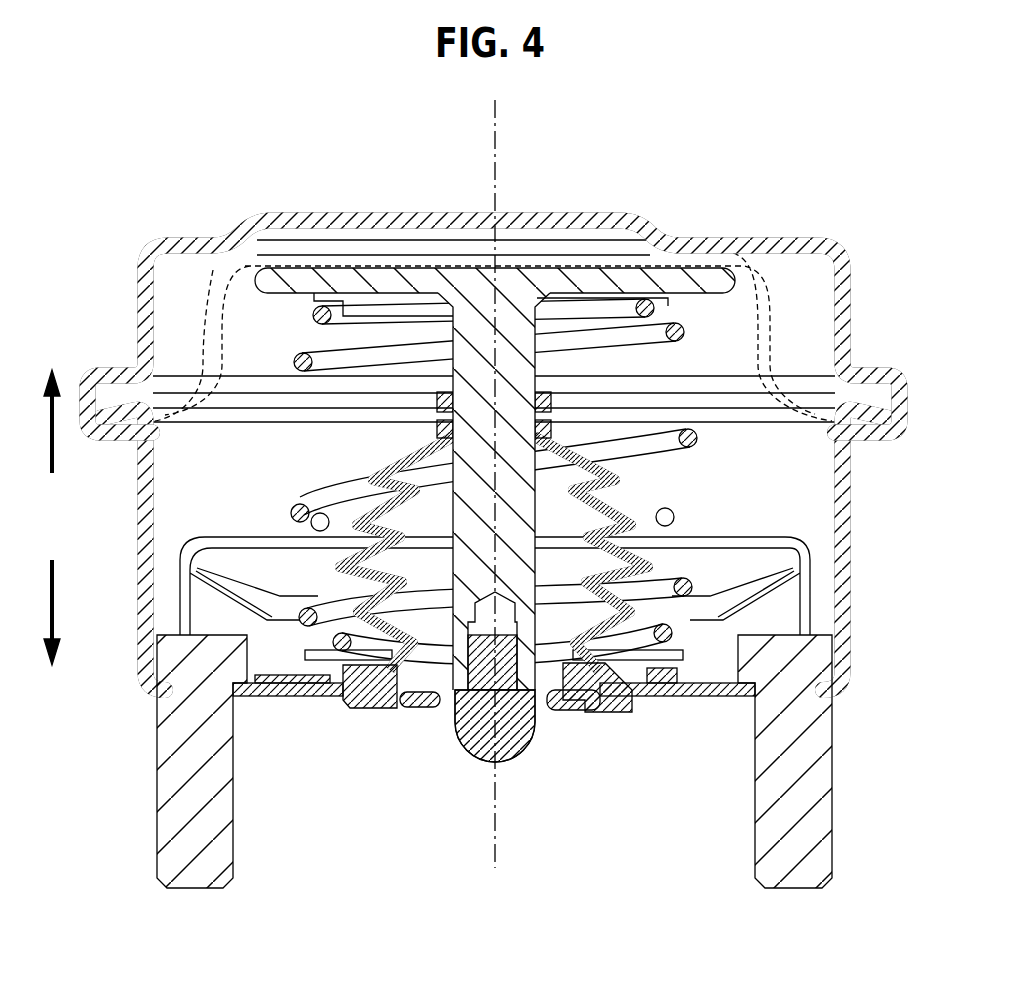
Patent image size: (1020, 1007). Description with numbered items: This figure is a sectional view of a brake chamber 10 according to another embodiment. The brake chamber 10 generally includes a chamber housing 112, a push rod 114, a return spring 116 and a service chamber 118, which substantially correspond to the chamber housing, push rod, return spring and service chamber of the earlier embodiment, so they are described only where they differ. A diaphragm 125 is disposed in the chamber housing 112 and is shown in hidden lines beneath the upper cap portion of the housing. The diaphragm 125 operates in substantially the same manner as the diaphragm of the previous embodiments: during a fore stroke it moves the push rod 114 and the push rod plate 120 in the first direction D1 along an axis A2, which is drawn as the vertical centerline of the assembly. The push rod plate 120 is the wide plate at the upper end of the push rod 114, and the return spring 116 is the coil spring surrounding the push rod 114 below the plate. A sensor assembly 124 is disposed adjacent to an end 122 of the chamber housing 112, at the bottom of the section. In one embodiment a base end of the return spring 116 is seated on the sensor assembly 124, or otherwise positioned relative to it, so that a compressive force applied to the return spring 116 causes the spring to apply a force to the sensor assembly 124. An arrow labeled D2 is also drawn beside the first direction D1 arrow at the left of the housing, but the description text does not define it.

The thermostat assembly 10 is at (178, 183).
The chamber housing 112 is at (848, 468).
The push rod 114 is at (587, 546).
The return spring 116 is at (688, 586).
The service chamber 118 is at (197, 487).
The push rod plate 120 is at (722, 290).
The end of the chamber housing 122 is at (288, 697).
The sensor assembly 124 is at (673, 697).
The diaphragm 125 is at (213, 270).
The axis A2 is at (493, 800).
The first direction D1 is at (32, 612).
The second direction D2 is at (32, 421).